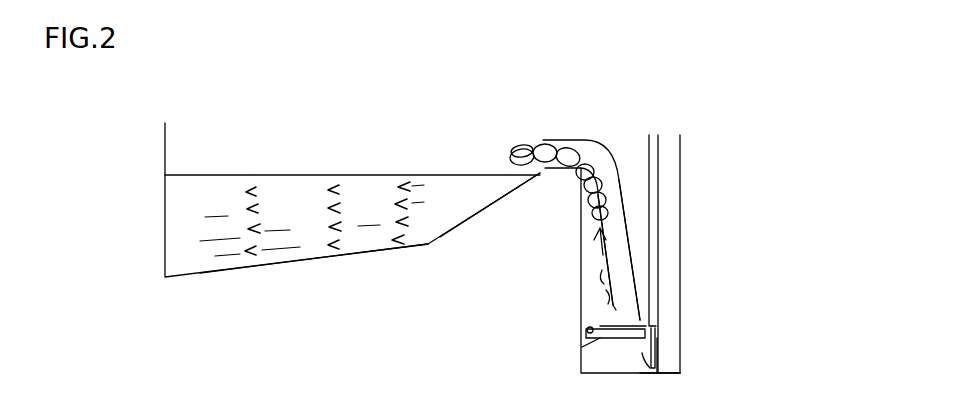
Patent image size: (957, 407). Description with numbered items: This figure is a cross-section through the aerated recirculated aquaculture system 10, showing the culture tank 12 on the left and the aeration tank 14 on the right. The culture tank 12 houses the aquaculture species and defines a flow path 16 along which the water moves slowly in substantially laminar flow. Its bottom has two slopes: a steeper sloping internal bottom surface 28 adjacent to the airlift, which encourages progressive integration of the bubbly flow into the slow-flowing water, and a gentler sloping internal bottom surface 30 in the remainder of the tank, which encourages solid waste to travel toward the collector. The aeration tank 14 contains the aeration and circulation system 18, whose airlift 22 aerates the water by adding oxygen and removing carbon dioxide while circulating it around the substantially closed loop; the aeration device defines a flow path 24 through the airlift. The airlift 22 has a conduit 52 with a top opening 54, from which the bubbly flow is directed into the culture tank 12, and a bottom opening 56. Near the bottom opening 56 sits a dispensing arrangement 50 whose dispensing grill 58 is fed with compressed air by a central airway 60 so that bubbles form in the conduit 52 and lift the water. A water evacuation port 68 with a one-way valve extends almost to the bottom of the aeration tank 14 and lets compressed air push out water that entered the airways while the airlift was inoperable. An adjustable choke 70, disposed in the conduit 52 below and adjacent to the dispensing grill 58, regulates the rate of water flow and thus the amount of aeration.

The aerated recirculated aquaculture system 10 is at (340, 110).
The culture tank 12 is at (165, 206).
The aeration tank 14 is at (680, 272).
The flow path 16 is at (283, 192).
The aeration and circulation system 18 is at (580, 260).
The airlift 22 is at (580, 140).
The flow path 24 is at (607, 283).
The sloping internal bottom surface 28 is at (475, 217).
The sloping internal bottom surface 30 is at (268, 268).
The dispensing arrangement 50 is at (657, 315).
The conduit 52 is at (617, 188).
The top opening 54 is at (545, 143).
The bottom opening 56 is at (670, 375).
The dispensing grill 58 is at (600, 318).
The central airway 60 is at (657, 327).
The water evacuation port 68 is at (657, 338).
The adjustable choke 70 is at (598, 343).